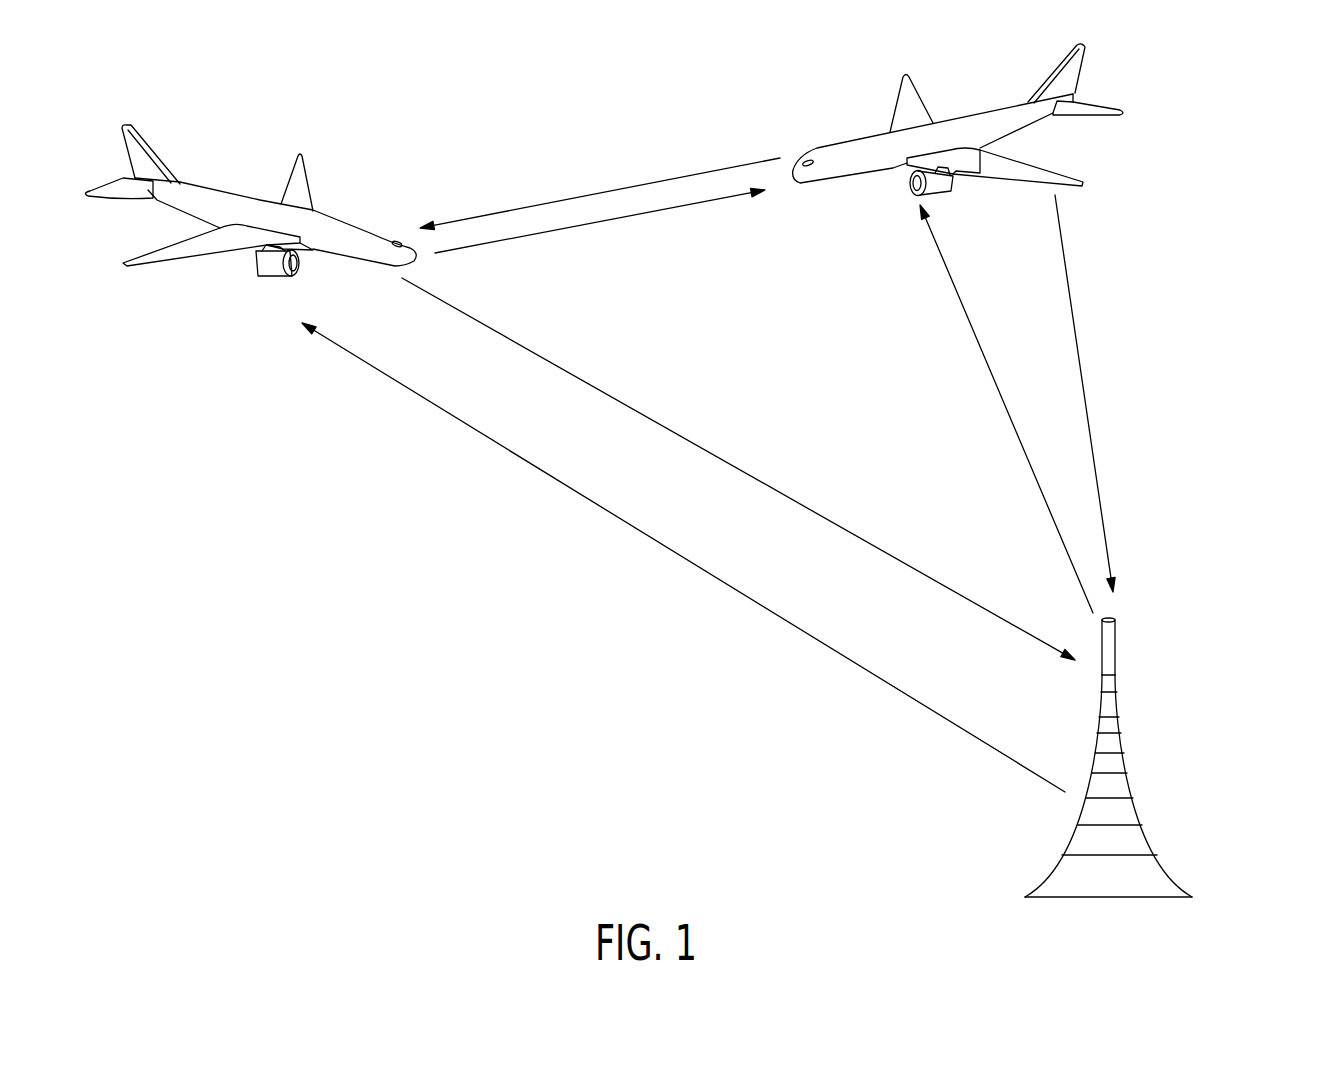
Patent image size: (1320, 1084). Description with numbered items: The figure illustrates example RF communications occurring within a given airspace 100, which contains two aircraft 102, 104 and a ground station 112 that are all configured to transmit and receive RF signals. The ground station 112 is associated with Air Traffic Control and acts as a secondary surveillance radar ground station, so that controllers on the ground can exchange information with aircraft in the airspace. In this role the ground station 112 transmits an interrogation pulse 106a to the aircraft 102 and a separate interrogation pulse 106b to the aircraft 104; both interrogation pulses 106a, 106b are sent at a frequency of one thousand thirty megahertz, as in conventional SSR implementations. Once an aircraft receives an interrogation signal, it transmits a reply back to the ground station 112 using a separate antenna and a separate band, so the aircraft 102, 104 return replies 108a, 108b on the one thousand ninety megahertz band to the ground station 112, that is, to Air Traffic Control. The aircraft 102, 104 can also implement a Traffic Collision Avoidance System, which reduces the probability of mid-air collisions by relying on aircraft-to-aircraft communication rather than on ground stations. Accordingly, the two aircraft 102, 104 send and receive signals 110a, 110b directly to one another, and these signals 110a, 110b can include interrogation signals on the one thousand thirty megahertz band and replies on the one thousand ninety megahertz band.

The airspace 100 is at (1260, 131).
The aircraft 102 is at (327, 210).
The aircraft 104 is at (830, 143).
The interrogation pulse 106a is at (865, 672).
The interrogation pulse 106b is at (1002, 400).
The reply 108a is at (905, 563).
The reply 108b is at (1078, 332).
The signal 110a is at (570, 228).
The signal 110b is at (617, 188).
The ground station 112 is at (1117, 660).